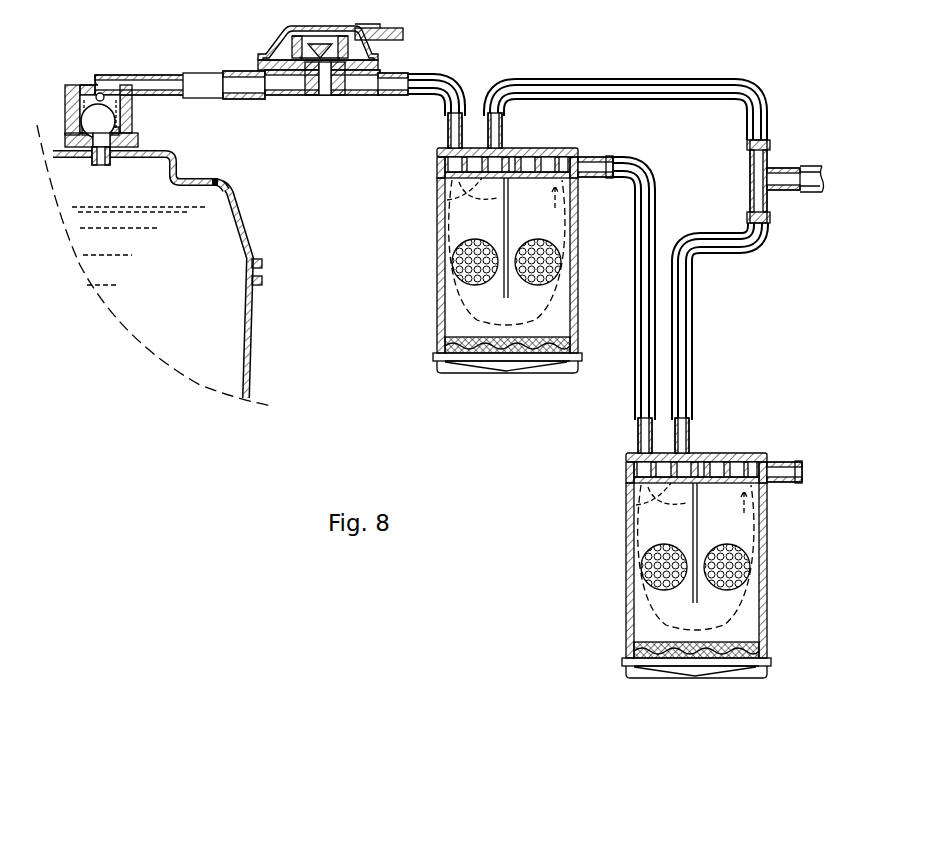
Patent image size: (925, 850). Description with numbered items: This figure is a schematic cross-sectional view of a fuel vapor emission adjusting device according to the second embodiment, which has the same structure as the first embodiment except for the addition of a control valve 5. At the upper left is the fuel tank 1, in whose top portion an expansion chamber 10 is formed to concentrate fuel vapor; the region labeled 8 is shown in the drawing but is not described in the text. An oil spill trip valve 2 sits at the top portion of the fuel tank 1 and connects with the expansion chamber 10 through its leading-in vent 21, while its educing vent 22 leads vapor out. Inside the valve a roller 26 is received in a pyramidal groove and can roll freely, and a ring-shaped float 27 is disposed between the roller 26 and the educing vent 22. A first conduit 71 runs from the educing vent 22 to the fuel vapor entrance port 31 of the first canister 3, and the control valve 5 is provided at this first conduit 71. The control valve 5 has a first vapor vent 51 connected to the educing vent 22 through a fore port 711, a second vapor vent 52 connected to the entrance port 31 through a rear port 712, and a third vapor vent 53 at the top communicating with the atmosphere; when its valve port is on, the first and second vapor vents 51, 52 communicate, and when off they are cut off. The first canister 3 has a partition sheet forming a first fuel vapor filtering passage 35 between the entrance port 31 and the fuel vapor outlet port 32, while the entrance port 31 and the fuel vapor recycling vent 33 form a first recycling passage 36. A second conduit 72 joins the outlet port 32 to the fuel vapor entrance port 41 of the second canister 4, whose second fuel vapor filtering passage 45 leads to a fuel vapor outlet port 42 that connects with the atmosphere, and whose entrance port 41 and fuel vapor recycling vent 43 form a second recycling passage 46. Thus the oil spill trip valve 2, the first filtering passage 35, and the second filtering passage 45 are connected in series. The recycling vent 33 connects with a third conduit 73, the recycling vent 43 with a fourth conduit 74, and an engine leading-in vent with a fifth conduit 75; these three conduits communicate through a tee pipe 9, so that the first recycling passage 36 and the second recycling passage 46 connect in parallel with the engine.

The fuel tank 1 is at (249, 221).
The expansion chamber 10 is at (162, 186).
The tank wall opening 8 is at (206, 202).
The oil spill trip valve 2 is at (120, 88).
The leading-in vent 21 is at (138, 144).
The educing vent 22 is at (172, 65).
The roller 26 is at (102, 121).
The ring-shaped float 27 is at (83, 90).
The fore port 711 is at (208, 77).
The control valve 5 is at (325, 72).
The first vapor vent 51 is at (300, 90).
The second vapor vent 52 is at (373, 90).
The third vapor vent 53 is at (363, 39).
The first conduit 71 is at (445, 69).
The rear port 712 is at (462, 96).
The third conduit 73 is at (658, 80).
The second conduit 72 is at (660, 224).
The fourth conduit 74 is at (695, 278).
The fifth conduit 75 is at (810, 167).
The tee pipe 9 is at (750, 185).
The first canister 3 is at (503, 273).
The fuel vapor entrance port 31 is at (450, 140).
The fuel vapor outlet port 32 is at (591, 166).
The fuel vapor recycling vent 33 is at (497, 144).
The first fuel vapor filtering passage 35 is at (452, 316).
The first recycling passage 36 is at (442, 202).
The second canister 4 is at (693, 575).
The fuel vapor entrance port 41 is at (640, 445).
The fuel vapor outlet port 42 is at (779, 473).
The fuel vapor recycling vent 43 is at (686, 448).
The second fuel vapor filtering passage 45 is at (650, 620).
The second recycling passage 46 is at (640, 511).